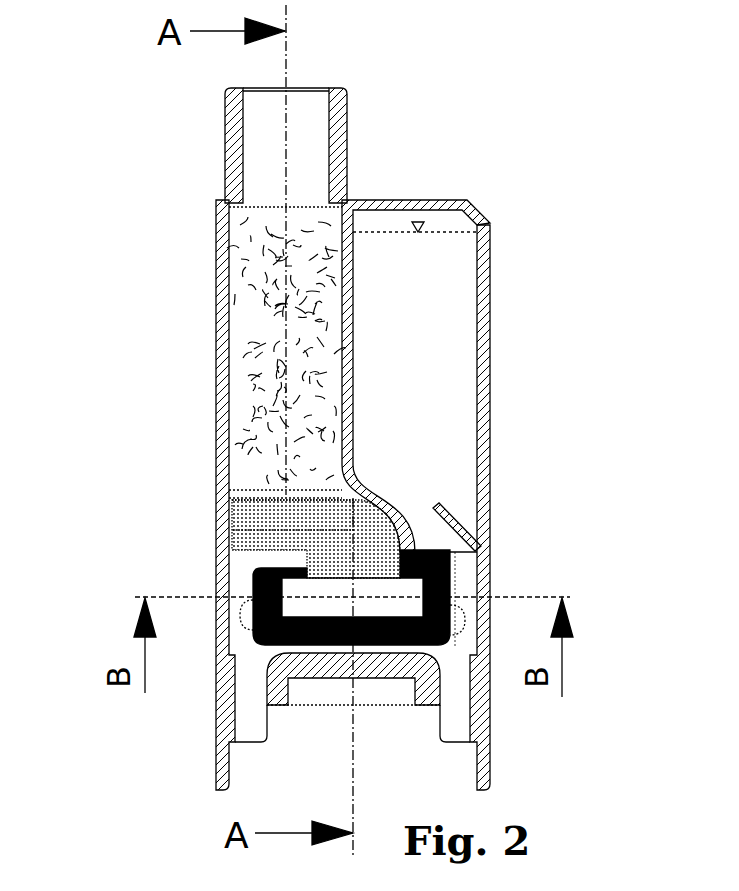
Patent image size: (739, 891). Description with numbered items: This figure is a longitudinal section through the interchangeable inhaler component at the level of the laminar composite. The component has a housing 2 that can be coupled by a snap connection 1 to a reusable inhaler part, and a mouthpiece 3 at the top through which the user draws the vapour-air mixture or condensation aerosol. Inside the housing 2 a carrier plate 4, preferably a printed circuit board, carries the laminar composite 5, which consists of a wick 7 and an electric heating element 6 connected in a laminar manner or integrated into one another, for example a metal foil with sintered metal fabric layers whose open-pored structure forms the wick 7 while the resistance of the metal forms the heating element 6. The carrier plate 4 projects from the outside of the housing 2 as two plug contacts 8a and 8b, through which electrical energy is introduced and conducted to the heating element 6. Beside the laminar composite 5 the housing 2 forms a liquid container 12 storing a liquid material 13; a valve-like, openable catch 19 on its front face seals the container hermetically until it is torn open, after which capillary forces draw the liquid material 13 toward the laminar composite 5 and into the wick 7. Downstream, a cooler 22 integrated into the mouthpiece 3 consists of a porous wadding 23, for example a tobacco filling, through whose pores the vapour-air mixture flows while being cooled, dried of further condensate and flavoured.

The snap connection 1 is at (213, 775).
The housing 2 is at (225, 523).
The mouthpiece 3 is at (226, 131).
The carrier plate 4 is at (465, 583).
The laminar composite 5 is at (255, 594).
The electric heating element 6 is at (255, 594).
The wick 7 is at (250, 578).
The plug contact 8a is at (455, 729).
The plug contact 8b is at (247, 730).
The liquid container 12 is at (484, 352).
The liquid material 13 is at (418, 282).
The openable catch 19 is at (460, 520).
The cooler 22 is at (208, 357).
The porous wadding 23 is at (267, 322).